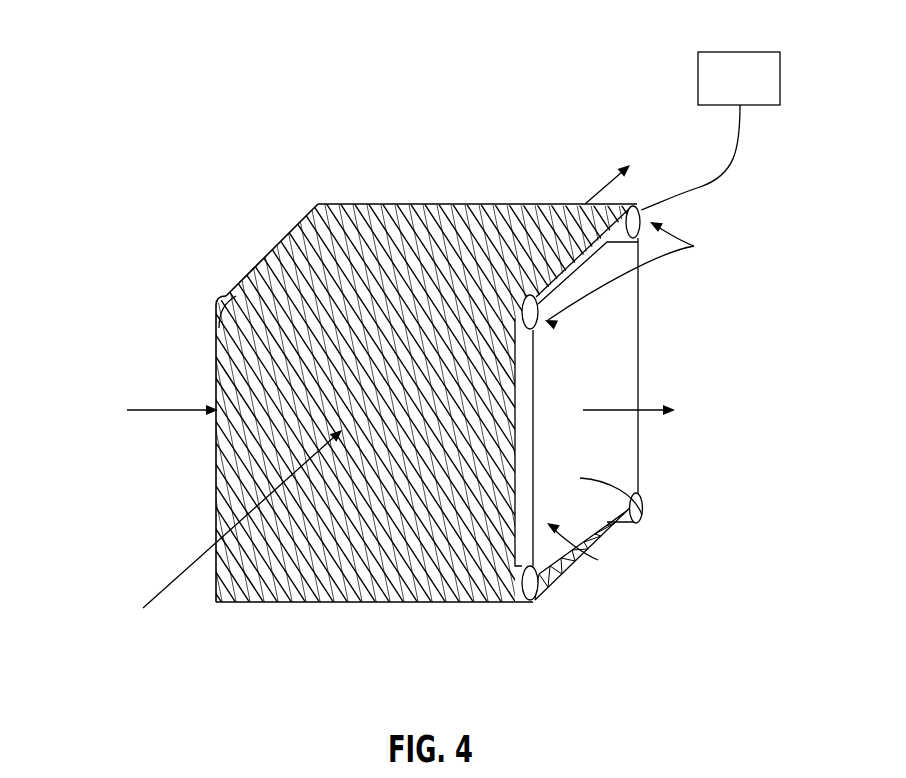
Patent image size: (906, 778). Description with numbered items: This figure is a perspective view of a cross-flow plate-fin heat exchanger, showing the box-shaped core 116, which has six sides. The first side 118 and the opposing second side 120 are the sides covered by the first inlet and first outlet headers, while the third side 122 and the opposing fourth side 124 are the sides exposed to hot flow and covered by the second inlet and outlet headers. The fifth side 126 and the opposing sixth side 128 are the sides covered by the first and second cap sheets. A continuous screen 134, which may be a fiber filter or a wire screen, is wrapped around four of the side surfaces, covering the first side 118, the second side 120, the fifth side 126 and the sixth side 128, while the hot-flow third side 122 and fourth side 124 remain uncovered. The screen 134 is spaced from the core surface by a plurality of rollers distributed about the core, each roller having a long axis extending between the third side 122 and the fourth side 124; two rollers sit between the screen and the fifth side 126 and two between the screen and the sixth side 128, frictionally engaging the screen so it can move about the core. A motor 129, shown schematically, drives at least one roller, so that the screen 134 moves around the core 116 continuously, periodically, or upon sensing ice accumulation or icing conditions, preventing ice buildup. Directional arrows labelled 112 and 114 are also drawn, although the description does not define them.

The light beam / irradiation direction 112 is at (181, 572).
The inlet air flow 114 is at (152, 408).
The core 116 is at (594, 562).
The first side 118 is at (477, 603).
The second side 120 is at (385, 204).
The third side 122 is at (260, 262).
The fourth side 124 is at (642, 513).
The fifth side 126 is at (500, 220).
The sixth side 128 is at (332, 603).
The motor 129 is at (740, 52).
The screen 134 is at (313, 248).